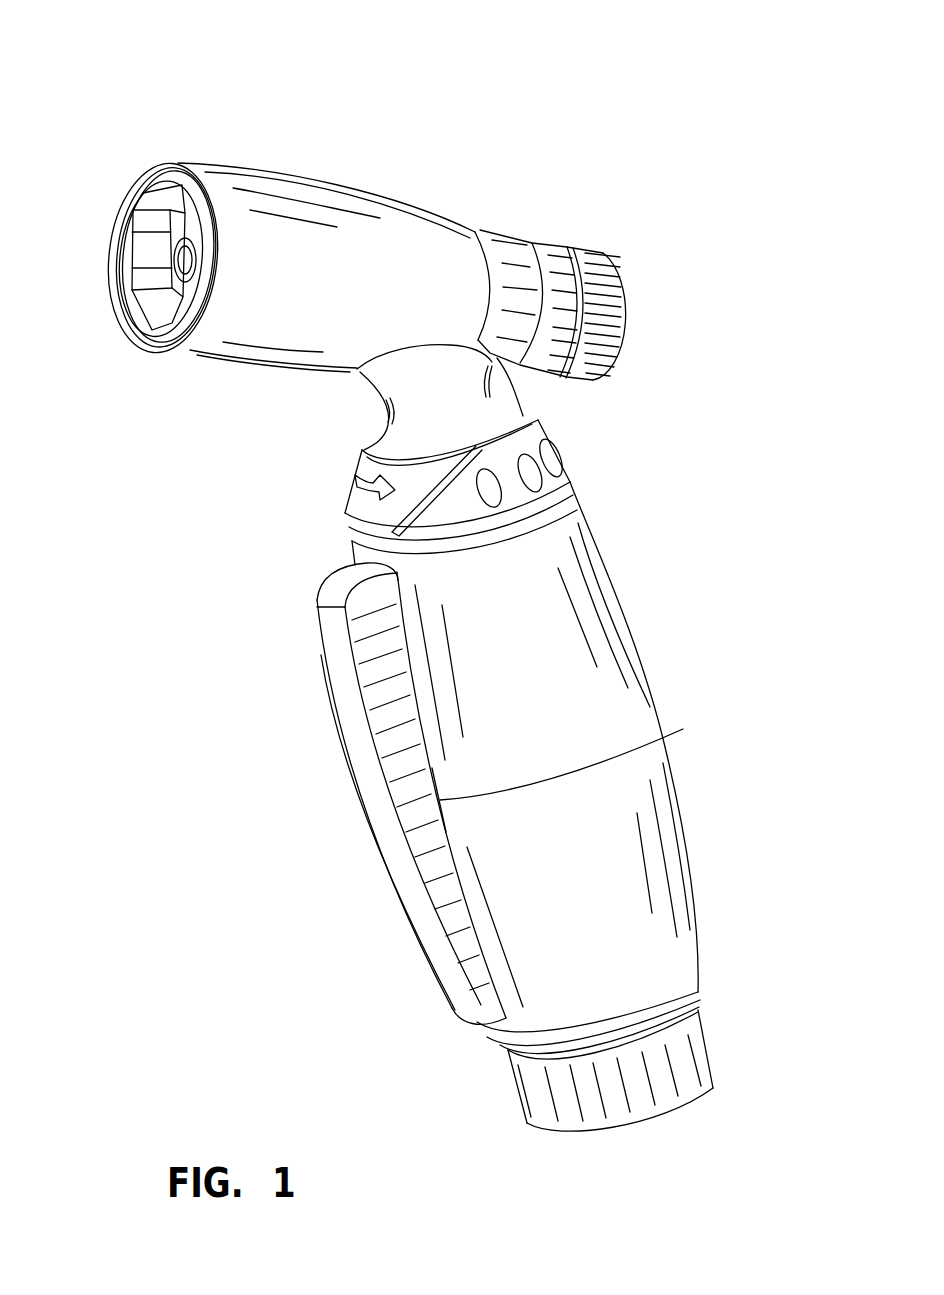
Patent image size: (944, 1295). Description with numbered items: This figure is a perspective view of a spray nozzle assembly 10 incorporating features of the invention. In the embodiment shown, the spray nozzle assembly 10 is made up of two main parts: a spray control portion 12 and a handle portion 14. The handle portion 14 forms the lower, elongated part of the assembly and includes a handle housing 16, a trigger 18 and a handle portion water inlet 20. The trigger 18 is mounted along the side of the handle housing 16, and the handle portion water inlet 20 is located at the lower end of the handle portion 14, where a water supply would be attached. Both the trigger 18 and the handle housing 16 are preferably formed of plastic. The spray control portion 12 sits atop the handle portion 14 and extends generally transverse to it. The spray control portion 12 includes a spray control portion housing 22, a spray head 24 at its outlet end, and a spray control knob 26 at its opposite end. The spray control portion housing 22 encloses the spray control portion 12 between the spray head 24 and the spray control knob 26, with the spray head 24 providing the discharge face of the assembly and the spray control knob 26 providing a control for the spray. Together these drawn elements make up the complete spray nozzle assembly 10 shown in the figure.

The spray nozzle assembly 10 is at (688, 119).
The spray control portion 12 is at (279, 166).
The handle portion 14 is at (670, 530).
The handle housing 16 is at (653, 730).
The trigger 18 is at (323, 650).
The handle portion water inlet 20 is at (703, 1015).
The spray control portion housing 22 is at (403, 204).
The spray head 24 is at (118, 300).
The spray control knob 26 is at (590, 243).